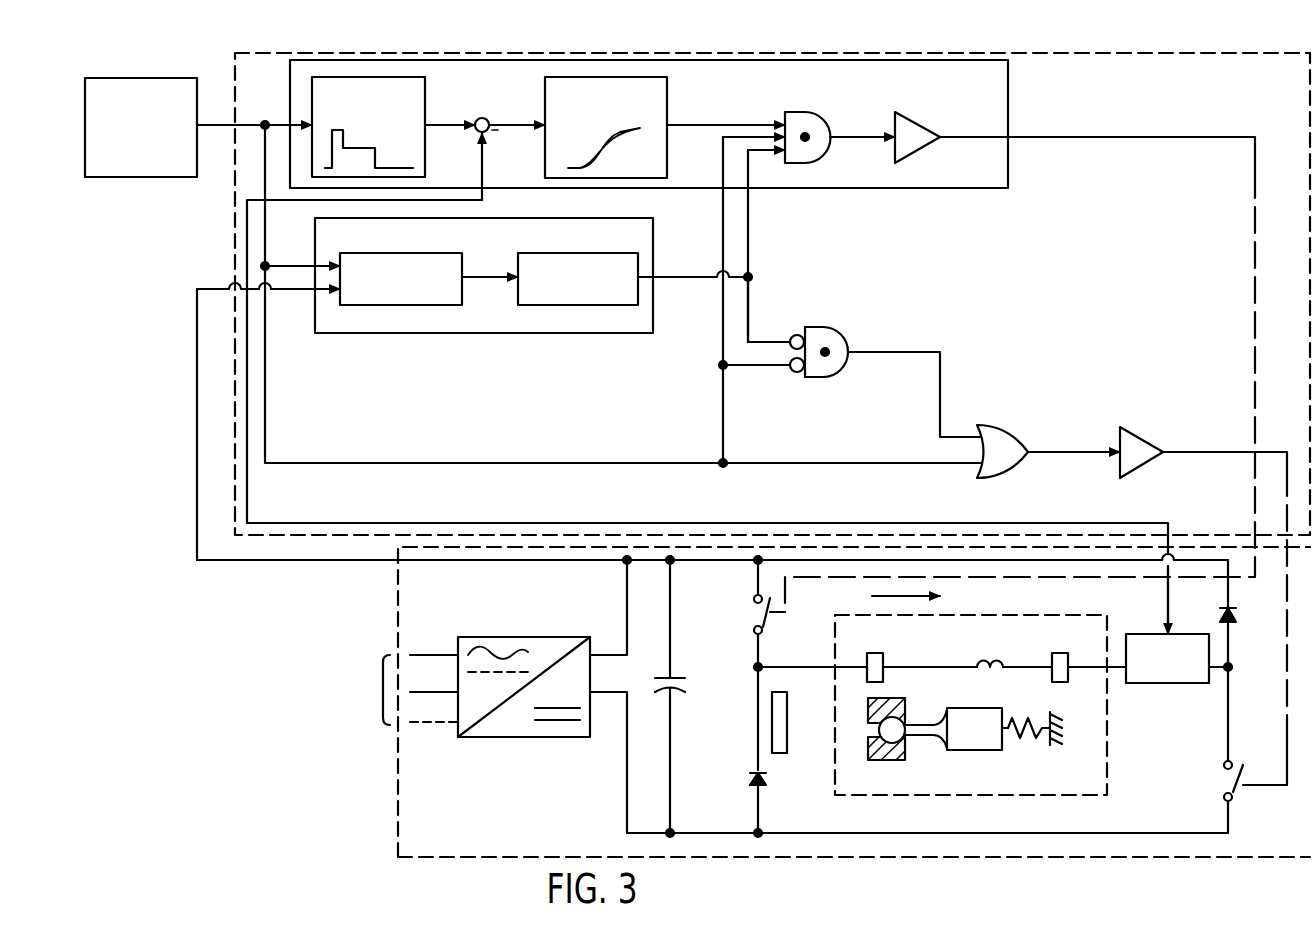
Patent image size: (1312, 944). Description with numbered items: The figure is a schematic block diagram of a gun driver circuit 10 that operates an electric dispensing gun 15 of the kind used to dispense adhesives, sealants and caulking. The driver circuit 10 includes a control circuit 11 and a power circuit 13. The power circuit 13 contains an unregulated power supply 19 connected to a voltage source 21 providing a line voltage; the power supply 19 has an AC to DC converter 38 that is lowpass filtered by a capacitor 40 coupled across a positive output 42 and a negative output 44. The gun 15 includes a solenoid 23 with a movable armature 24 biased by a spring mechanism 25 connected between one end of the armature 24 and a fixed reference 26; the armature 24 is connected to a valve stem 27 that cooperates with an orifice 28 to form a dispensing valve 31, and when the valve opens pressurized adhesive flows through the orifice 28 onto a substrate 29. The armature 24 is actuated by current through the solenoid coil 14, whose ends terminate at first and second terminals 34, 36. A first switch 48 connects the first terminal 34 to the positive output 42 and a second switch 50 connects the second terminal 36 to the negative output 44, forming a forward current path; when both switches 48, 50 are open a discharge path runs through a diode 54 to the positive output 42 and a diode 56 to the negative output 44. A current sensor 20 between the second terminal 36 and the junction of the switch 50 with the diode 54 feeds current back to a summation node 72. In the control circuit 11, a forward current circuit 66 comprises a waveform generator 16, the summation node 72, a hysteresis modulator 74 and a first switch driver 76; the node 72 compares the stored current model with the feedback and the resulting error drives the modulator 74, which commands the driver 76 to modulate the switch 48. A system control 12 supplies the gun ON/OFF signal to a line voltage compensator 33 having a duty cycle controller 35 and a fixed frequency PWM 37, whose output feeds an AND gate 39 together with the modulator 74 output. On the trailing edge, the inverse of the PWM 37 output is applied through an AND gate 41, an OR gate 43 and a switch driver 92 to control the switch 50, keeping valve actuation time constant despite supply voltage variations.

The gun driver circuit 10 is at (222, 641).
The control circuit 11 is at (300, 573).
The system control 12 is at (170, 175).
The power circuit 13 is at (392, 738).
The solenoid coil 14 is at (978, 660).
The electric dispensing gun 15 is at (1025, 797).
The waveform generator 16 is at (425, 108).
The unregulated power supply 19 is at (490, 745).
The current sensor 20 is at (1163, 683).
The voltage source 21 is at (383, 690).
The solenoid 23 is at (992, 628).
The armature 24 is at (980, 736).
The spring mechanism 25 is at (1018, 722).
The fixed reference 26 is at (1058, 716).
The plunger or valve stem 27 is at (934, 716).
The orifice 28 is at (866, 728).
The substrate 29 is at (780, 753).
The dispensing valve 31 is at (911, 743).
The line voltage compensator 33 is at (653, 240).
The first terminal 34 is at (872, 653).
The duty cycle controller 35 is at (440, 305).
The second terminal 36 is at (1060, 653).
The fixed frequency PWM 37 is at (600, 305).
The AC to DC converter 38 is at (576, 696).
The AND gate 39 is at (790, 112).
The capacitor 40 is at (676, 673).
The AND gate 41 is at (838, 333).
The positive output 42 is at (705, 562).
The OR gate 43 is at (995, 425).
The negative output 44 is at (710, 832).
The first switch 48 is at (752, 617).
The second switch 50 is at (1228, 786).
The diode 54 is at (1222, 616).
The diode 56 is at (750, 780).
The forward current circuit 66 is at (1008, 100).
The summation node 72 is at (486, 117).
The hysteresis modulator 74 is at (656, 170).
The first switch driver 76 is at (918, 148).
The switch driver 92 is at (1137, 463).